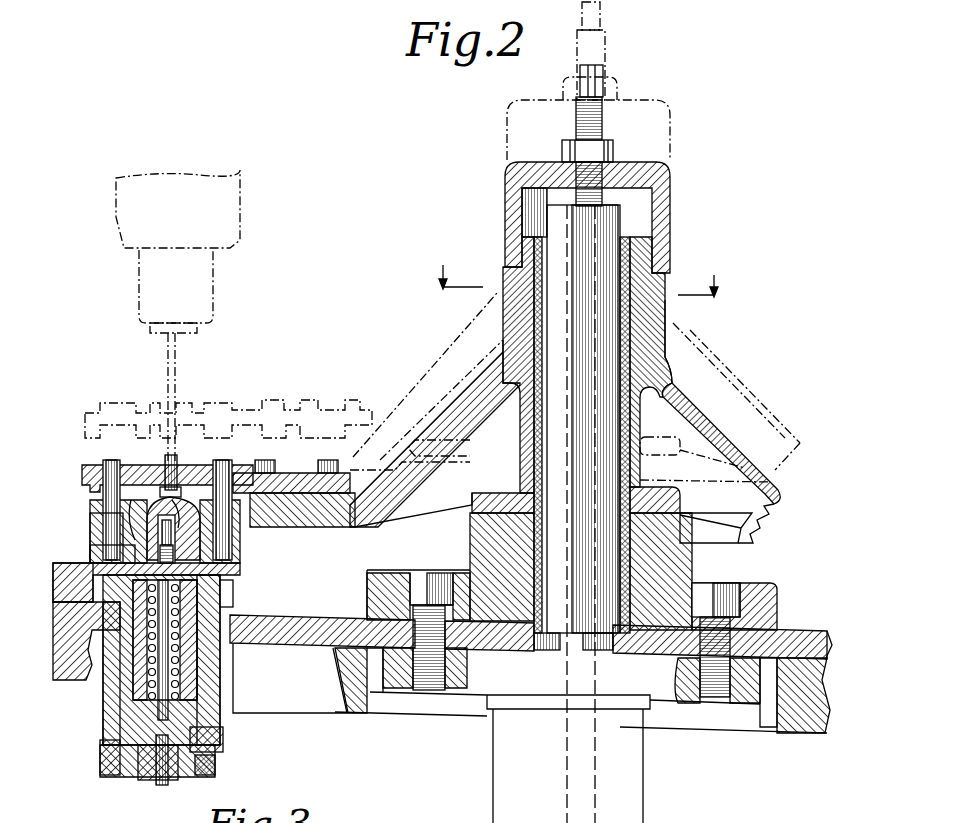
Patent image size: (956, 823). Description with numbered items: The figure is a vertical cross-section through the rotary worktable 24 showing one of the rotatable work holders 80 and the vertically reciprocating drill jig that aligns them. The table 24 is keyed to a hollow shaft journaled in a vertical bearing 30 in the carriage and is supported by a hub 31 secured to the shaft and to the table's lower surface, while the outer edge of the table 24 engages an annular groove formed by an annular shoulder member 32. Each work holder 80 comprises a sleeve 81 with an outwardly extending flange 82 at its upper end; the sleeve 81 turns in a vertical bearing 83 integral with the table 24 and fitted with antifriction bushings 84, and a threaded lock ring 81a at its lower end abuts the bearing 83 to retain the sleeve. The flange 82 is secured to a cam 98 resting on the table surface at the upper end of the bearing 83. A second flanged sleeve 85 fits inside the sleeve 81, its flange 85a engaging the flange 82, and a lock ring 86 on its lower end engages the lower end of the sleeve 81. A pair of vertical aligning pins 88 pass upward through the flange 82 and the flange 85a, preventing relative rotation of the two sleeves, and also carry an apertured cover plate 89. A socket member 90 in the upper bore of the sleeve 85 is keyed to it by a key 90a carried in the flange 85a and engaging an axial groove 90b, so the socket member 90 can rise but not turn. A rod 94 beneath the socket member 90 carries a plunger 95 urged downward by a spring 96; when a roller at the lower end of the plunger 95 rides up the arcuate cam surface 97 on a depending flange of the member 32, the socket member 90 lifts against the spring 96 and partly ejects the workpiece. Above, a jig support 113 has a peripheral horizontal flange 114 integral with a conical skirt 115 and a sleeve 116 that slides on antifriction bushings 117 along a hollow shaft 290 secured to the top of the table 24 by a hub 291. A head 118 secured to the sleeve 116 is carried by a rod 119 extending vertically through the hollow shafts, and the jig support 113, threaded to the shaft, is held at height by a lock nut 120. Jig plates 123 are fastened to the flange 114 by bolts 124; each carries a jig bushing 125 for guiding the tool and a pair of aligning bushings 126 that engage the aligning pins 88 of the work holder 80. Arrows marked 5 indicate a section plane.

The section line 5- 5 is at (578, 272).
The worktable 24 is at (342, 606).
The vertical bearing 30 is at (503, 778).
The hub 31 is at (483, 680).
The annular shoulder member 32 is at (67, 683).
The work holder 80 is at (245, 578).
The sleeve 81 is at (210, 688).
The threaded lock ring 81a is at (102, 748).
The outwardly extending flange 82 is at (97, 569).
The vertical bearing 83 is at (98, 713).
The antifriction bushings 84 is at (207, 728).
The second flanged sleeve 85 is at (137, 773).
The flange 85a is at (97, 553).
The lock ring 86 is at (110, 770).
The vertical aligning pins 88 is at (104, 507).
The cover plate 89 is at (92, 530).
The socket member 90 is at (220, 562).
The key 90a is at (128, 487).
The groove 90b is at (150, 500).
The rod 94 is at (196, 648).
The plunger 95 is at (183, 777).
The spring 96 is at (200, 665).
The arcuate cam surface 97 is at (157, 780).
The cam 98 is at (253, 595).
The jig support 113 is at (673, 315).
The peripheral horizontal flange 114 is at (320, 527).
The conical skirt 115 is at (722, 437).
The sleeve 116 is at (536, 412).
The antifriction bushings 117 is at (628, 288).
The head 118 is at (668, 175).
The rod 119 is at (592, 132).
The lock nut 120 is at (613, 155).
The jig plates 123 is at (283, 477).
The bolts 124 is at (263, 467).
The jig bushing 125 is at (175, 462).
The aligning bushings 126 is at (104, 465).
The hollow shaft 290 is at (550, 370).
The hub 291 is at (775, 600).